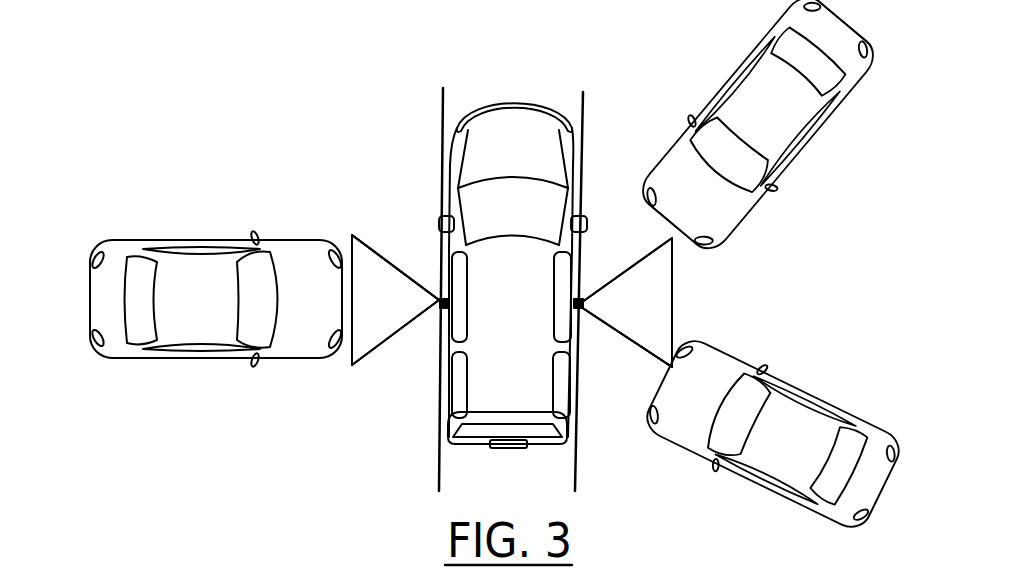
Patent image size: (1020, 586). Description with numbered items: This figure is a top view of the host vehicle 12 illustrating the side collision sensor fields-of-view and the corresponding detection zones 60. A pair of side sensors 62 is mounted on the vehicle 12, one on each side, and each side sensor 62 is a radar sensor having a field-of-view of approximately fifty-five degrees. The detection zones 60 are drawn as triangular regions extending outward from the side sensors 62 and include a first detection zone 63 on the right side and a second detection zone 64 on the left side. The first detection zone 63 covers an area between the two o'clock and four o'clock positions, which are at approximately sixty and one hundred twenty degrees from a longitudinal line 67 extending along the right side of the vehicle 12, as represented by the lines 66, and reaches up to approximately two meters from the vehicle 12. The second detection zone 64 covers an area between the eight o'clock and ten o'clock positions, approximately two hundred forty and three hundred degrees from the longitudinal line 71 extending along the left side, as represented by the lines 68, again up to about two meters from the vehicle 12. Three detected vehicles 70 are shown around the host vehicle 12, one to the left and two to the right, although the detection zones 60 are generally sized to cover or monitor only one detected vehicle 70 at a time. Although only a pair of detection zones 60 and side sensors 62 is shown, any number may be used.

The host vehicle 12 is at (545, 104).
The detection zones 60 is at (380, 348).
The side sensors 62 is at (436, 310).
The first detection zone 63 is at (628, 340).
The second detection zone 64 is at (383, 250).
The lines 66 is at (644, 256).
The longitudinal line 67 is at (577, 481).
The lines 68 is at (420, 312).
The detected vehicles 70 is at (278, 241).
The longitudinal line 71 is at (439, 472).